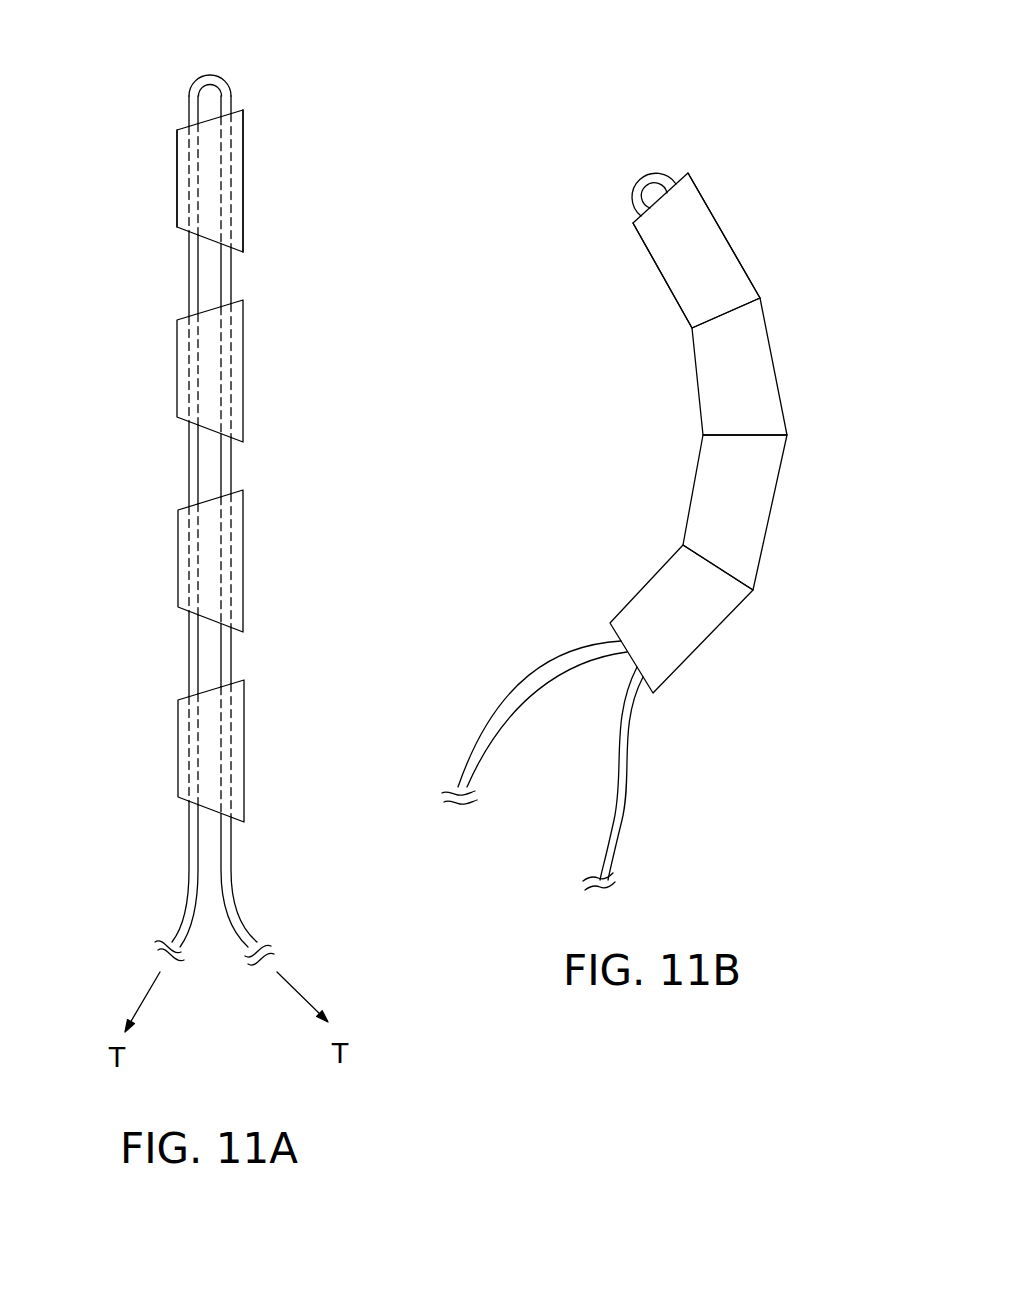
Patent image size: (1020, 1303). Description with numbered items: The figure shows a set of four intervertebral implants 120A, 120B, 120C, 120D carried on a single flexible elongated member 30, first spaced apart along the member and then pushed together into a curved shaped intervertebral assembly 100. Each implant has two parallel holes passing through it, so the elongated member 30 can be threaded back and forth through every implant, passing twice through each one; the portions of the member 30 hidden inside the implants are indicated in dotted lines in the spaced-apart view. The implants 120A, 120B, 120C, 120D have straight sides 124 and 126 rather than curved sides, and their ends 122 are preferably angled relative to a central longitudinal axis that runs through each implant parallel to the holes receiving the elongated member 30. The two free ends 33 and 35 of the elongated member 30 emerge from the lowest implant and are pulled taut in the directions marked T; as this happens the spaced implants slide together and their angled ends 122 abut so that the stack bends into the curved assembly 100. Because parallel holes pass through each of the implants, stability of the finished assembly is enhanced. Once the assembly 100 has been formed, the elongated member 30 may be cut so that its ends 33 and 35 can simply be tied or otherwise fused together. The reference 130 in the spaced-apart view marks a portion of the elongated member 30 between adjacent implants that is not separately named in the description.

In FIG. 11A, the elongated member 30 is at (197, 76).
In FIG. 11A, the end of elongated member 33 is at (173, 932).
In FIG. 11B, the end of elongated member 33 is at (456, 771).
In FIG. 11A, the end of elongated member 35 is at (248, 932).
In FIG. 11B, the end of elongated member 35 is at (608, 868).
In FIG. 11B, the intervertebral assembly 100 is at (707, 433).
In FIG. 11A, the implant 120A is at (182, 175).
In FIG. 11B, the implant 120A is at (648, 596).
In FIG. 11A, the implant 120B is at (188, 367).
In FIG. 11B, the implant 120B is at (707, 495).
In FIG. 11A, the implant 120C is at (193, 570).
In FIG. 11B, the implant 120C is at (700, 383).
In FIG. 11A, the implant 120D is at (193, 738).
In FIG. 11B, the implant 120D is at (665, 258).
In FIG. 11A, the ends of implants 122 is at (188, 256).
In FIG. 11A, the straight side 124 is at (178, 203).
In FIG. 11B, the straight side 124 is at (675, 302).
In FIG. 11A, the straight side 126 is at (242, 173).
In FIG. 11B, the straight side 126 is at (738, 247).
In FIG. 11A, the gap between panels 130 is at (188, 456).